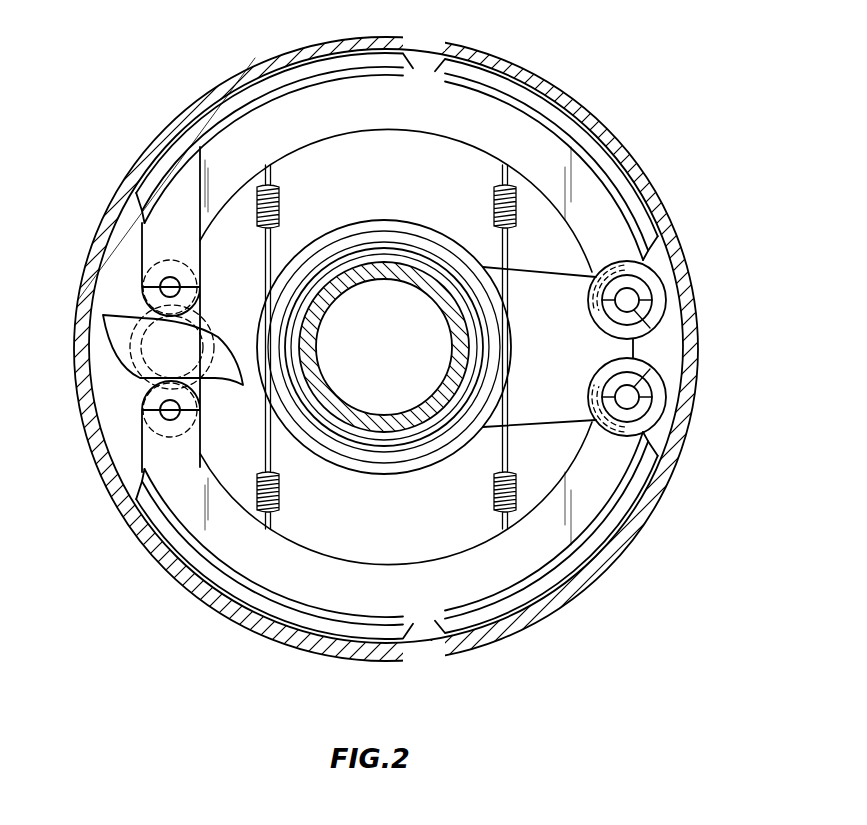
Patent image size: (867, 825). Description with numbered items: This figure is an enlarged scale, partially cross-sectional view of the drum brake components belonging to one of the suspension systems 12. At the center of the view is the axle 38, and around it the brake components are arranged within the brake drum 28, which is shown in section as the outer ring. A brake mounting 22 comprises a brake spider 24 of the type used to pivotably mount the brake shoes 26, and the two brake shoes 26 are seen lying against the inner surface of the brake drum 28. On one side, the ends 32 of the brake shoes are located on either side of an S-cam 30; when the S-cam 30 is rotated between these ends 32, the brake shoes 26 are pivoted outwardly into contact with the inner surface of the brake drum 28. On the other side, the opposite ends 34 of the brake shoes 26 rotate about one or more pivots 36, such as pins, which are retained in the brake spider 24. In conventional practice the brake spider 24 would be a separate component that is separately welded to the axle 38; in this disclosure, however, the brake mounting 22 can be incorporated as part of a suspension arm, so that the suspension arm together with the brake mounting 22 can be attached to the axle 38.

The suspension system 12 is at (642, 66).
The brake mounting 22 is at (572, 430).
The brake spider 24 is at (541, 267).
The brake shoes 26 is at (500, 88).
The brake drum 28 is at (397, 662).
The S-cam 30 is at (214, 388).
The ends of the brake shoes 32 is at (142, 298).
The opposite ends of the brake shoes 34 is at (637, 238).
The pivots 36 is at (636, 312).
The axle 38 is at (390, 433).